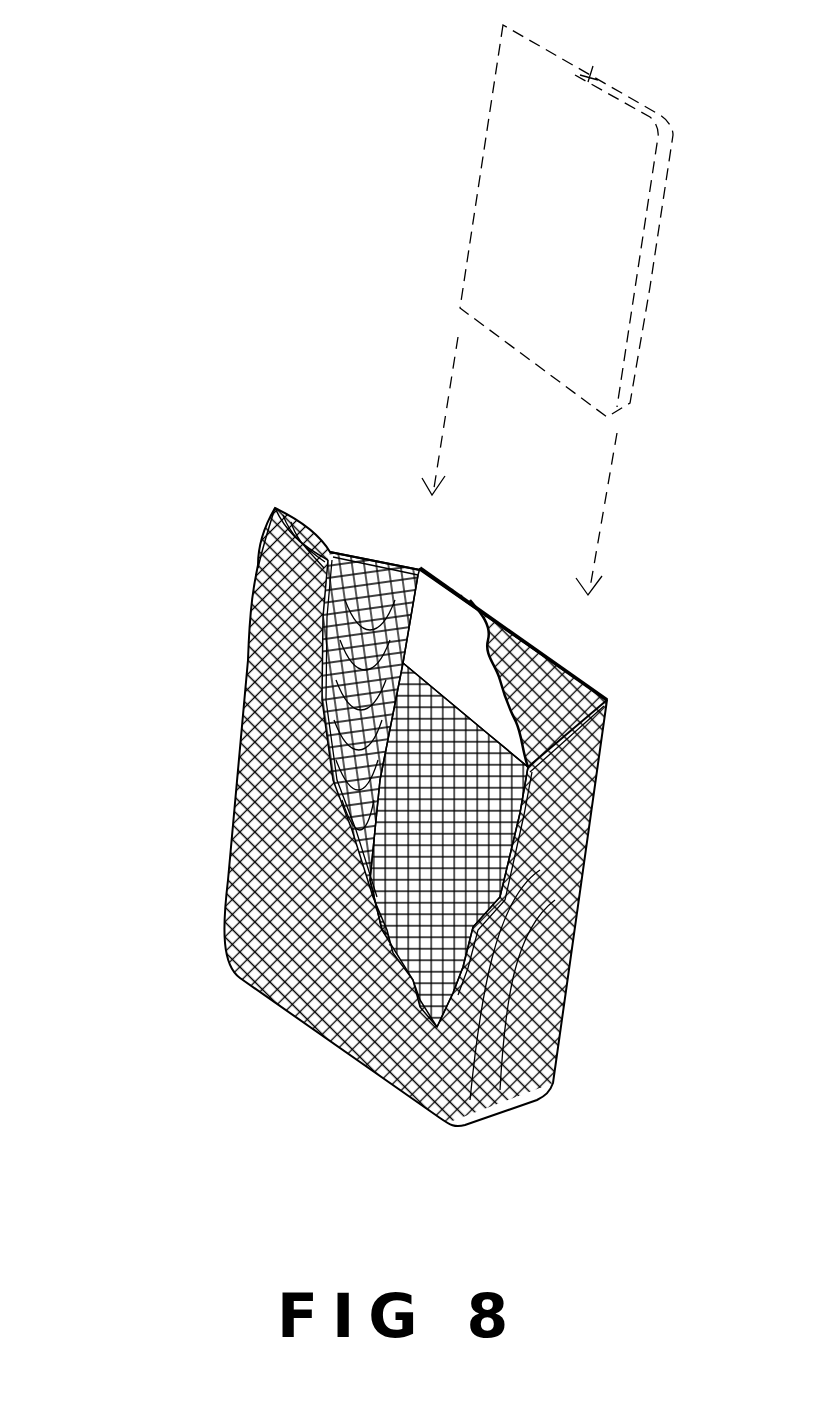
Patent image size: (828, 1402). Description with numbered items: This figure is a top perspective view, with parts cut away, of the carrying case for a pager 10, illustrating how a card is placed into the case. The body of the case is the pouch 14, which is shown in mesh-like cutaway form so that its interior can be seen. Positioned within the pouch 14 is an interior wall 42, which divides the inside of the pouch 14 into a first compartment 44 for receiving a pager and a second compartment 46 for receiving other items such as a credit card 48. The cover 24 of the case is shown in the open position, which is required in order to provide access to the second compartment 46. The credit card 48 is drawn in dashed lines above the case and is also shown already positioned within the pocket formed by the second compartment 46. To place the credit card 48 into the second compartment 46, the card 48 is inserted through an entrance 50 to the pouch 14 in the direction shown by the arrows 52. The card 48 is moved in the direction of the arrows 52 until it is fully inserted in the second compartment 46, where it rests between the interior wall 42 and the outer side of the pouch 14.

The carrying case for a pager 10 is at (228, 614).
The pouch 14 is at (235, 795).
The cover 24 is at (283, 562).
The interior wall 42 is at (555, 672).
The first compartment 44 is at (350, 570).
The second compartment 46 is at (522, 630).
The credit card 48 is at (588, 82).
The entrance 50 is at (370, 520).
The arrows 52 is at (450, 380).